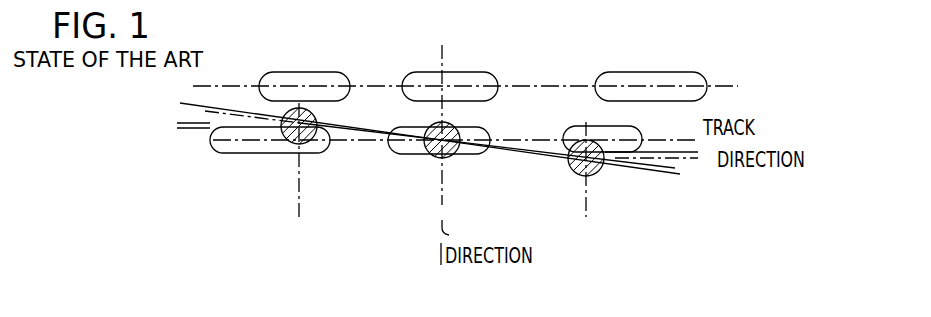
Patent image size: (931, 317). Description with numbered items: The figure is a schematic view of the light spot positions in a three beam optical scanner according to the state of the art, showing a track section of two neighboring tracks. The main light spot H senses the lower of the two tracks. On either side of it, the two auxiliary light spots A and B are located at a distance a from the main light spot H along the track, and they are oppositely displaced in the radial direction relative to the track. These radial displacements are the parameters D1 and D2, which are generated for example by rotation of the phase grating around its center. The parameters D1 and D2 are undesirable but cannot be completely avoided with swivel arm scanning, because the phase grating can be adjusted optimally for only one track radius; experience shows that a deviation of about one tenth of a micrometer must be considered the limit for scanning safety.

The auxiliary light spot A is at (288, 132).
The main light spot H is at (450, 126).
The auxiliary light spot B is at (593, 171).
The radial deviation parameter D1 is at (187, 110).
The radial deviation parameter D2 is at (690, 128).
The light spot distance a is at (586, 188).